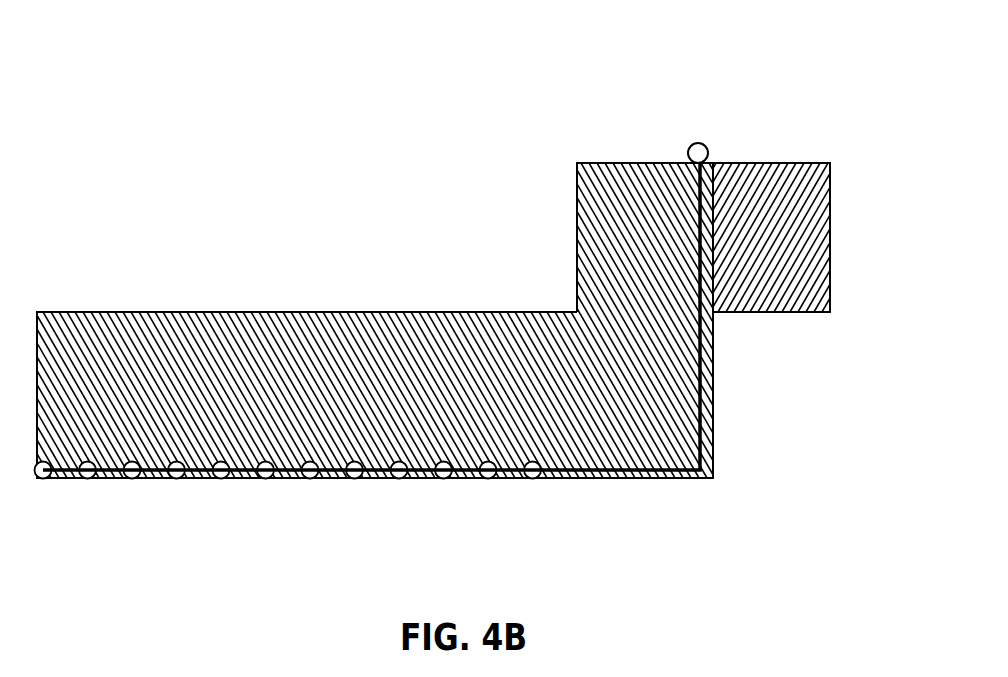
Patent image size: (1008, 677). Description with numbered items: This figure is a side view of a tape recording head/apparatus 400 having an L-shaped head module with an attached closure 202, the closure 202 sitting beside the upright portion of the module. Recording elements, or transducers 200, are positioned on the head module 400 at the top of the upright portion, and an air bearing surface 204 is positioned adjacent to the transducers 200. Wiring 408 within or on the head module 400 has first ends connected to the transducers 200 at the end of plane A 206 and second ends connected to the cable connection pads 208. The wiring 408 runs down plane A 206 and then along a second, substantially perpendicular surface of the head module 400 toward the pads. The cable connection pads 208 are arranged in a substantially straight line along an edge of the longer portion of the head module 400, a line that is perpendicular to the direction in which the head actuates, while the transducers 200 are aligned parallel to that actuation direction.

The recording elements (transducers) 200 is at (690, 134).
The closure 202 is at (786, 154).
The air bearing surface 204 is at (608, 156).
The plane A 206 is at (725, 378).
The cable connection pads 208 is at (166, 486).
The tape recording head/apparatus (head module) 400 is at (168, 302).
The wiring 408 is at (712, 447).